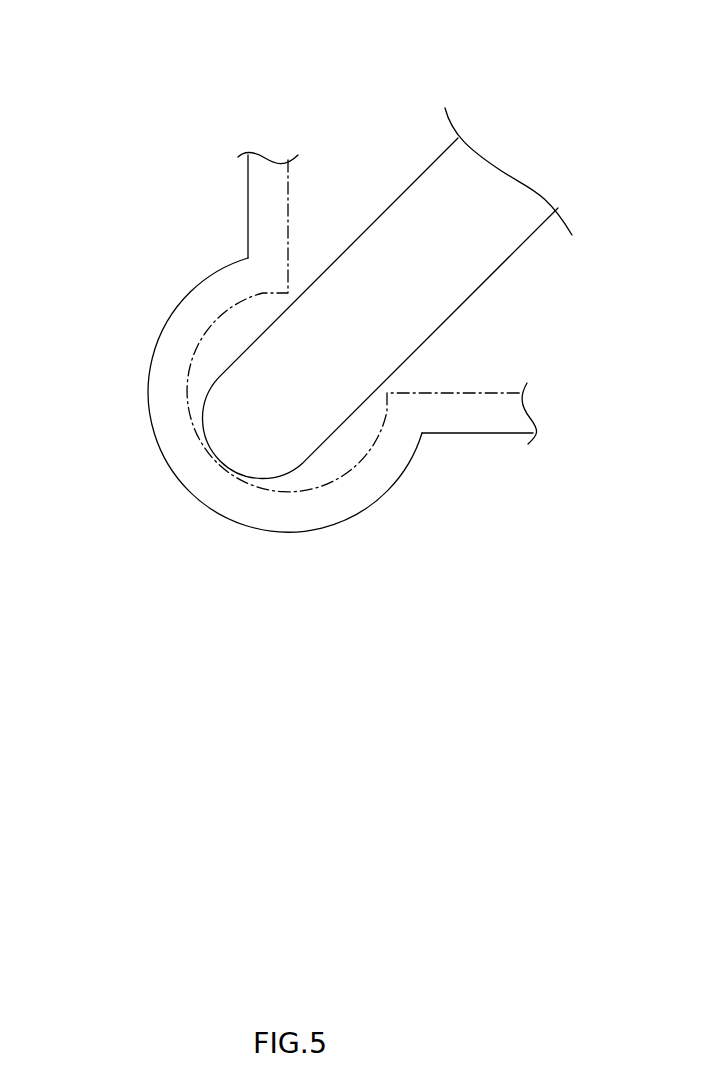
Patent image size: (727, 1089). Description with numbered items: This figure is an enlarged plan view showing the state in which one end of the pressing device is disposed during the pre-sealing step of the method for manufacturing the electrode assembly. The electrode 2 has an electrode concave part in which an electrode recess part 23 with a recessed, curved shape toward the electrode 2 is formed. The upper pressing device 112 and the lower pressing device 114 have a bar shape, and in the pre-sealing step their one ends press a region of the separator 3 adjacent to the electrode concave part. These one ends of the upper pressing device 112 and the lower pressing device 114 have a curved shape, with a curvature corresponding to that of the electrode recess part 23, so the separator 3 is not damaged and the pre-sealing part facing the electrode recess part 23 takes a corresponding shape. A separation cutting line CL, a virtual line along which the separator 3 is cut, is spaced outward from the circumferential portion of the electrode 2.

The electrode 2 is at (297, 376).
The separator 3 is at (478, 353).
The electrode recess part 23 is at (290, 533).
The upper pressing device 112 is at (387, 263).
The lower pressing device 114 is at (423, 197).
The separation cutting line CL is at (510, 386).